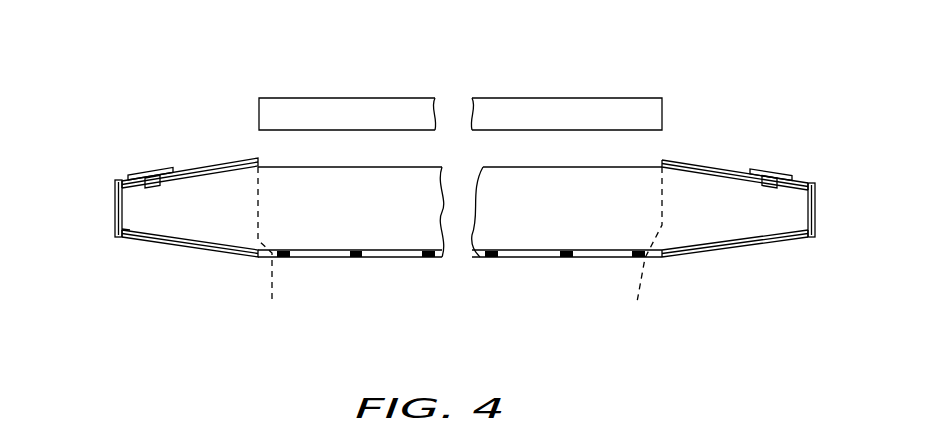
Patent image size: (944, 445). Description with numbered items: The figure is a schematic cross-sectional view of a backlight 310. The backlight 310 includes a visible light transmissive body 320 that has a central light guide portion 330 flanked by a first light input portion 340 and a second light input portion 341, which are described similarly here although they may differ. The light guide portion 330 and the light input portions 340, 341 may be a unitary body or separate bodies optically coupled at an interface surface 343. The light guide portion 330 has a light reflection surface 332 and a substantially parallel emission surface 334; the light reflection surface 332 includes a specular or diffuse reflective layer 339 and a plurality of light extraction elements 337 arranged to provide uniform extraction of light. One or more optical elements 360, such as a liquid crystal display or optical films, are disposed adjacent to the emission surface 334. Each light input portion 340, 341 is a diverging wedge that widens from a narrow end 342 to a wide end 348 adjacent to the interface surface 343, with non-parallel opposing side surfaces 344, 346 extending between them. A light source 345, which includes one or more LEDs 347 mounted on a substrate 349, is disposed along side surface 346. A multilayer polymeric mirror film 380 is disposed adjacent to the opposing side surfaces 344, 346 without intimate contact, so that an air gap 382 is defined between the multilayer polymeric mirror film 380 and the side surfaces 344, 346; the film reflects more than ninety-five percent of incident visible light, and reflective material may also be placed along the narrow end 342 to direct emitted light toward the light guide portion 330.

The backlight 310 is at (414, 64).
The visible light transmissive body 320 is at (581, 332).
The light guide portion 330 is at (535, 185).
The light reflection surface 332 is at (603, 250).
The emission surface 334 is at (623, 167).
The light extraction elements 337 is at (565, 258).
The reflective layer 339 is at (378, 263).
The first light input portion 340 is at (163, 110).
The second light input portion 341 is at (748, 108).
The narrow end 342 is at (115, 208).
The interface surface 343 is at (697, 293).
The side surface 344 is at (225, 242).
The light source 345 is at (143, 151).
The side surface 346 is at (233, 182).
The LEDs 347 is at (127, 237).
The wide end 348 is at (260, 187).
The substrate 349 is at (143, 170).
The optical element 360 is at (303, 110).
The multilayer polymeric mirror film 380 is at (769, 131).
The air gap 382 is at (173, 234).